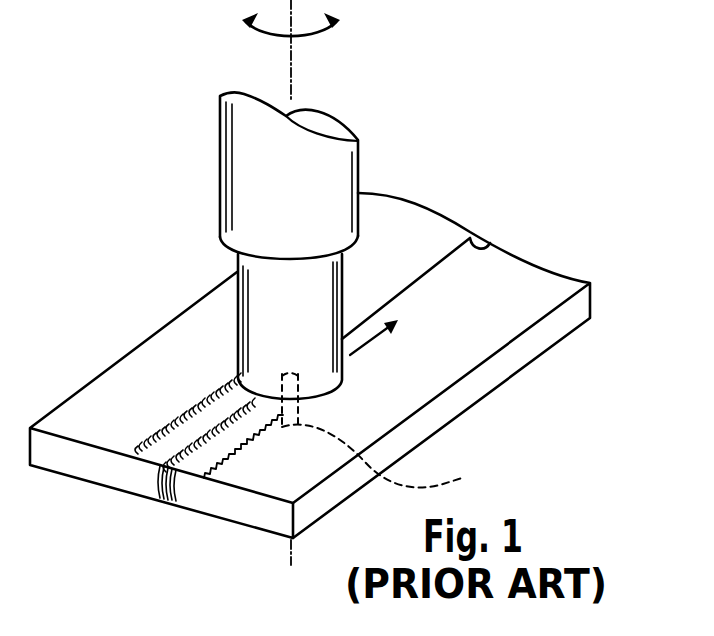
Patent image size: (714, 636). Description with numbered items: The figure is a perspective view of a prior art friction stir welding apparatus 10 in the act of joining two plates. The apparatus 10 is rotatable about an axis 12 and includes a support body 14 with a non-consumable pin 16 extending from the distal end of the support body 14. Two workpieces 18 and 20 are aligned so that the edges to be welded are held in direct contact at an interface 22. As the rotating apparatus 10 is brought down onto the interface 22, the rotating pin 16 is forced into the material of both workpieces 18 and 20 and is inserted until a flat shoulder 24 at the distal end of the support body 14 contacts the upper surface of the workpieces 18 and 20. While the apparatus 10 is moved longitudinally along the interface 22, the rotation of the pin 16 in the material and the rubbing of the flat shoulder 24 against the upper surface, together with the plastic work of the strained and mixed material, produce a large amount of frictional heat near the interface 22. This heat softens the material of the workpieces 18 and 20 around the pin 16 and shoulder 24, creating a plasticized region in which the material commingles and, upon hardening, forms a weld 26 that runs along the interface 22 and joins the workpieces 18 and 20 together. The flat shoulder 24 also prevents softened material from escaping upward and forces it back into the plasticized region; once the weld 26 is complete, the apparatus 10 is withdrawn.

The friction stir welding apparatus 10 is at (204, 172).
The axis 12 is at (291, 77).
The support body 14 is at (242, 263).
The non-consumable pin 16 is at (388, 434).
The workpiece 18 is at (524, 312).
The workpiece 20 is at (125, 427).
The interface 22 is at (484, 250).
The flat shoulder 24 is at (338, 393).
The weld 26 is at (162, 490).